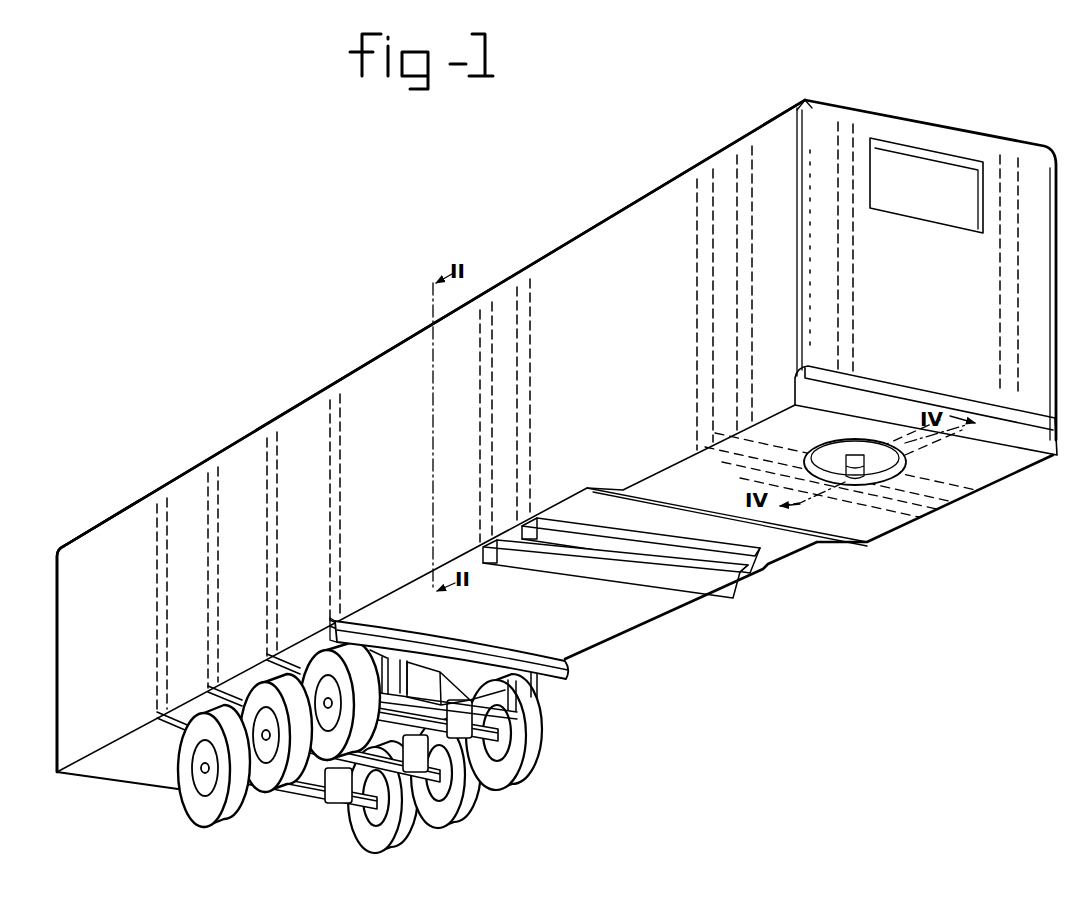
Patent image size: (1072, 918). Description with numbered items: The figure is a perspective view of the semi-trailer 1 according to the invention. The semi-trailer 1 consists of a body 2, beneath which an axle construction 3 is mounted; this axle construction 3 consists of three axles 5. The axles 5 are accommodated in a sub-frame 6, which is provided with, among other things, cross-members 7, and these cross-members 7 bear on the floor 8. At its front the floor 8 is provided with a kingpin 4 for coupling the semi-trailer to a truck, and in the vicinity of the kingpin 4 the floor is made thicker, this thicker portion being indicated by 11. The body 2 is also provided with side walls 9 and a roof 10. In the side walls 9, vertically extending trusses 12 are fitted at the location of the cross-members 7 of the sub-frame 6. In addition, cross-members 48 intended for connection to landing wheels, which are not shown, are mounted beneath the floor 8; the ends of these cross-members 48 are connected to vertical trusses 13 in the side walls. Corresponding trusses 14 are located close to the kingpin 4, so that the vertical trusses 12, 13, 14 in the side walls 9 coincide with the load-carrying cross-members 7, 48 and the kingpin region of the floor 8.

The semi-trailer 1 is at (350, 297).
The body 2 is at (586, 299).
The axle construction 3 is at (498, 796).
The kingpin 4 is at (862, 480).
The axles 5 is at (327, 806).
The sub-frame 6 is at (568, 688).
The cross-members 7 is at (443, 652).
The floor 8 is at (653, 610).
The side walls 9 is at (387, 396).
The roof 10 is at (136, 502).
The thicker floor portion 11 is at (1010, 465).
The trusses 12 is at (252, 452).
The vertical trusses 13 is at (512, 283).
The trusses 14 is at (712, 168).
The cross-members 48 is at (733, 592).